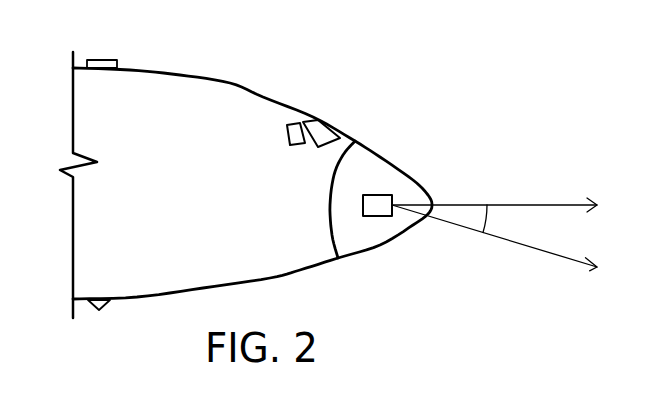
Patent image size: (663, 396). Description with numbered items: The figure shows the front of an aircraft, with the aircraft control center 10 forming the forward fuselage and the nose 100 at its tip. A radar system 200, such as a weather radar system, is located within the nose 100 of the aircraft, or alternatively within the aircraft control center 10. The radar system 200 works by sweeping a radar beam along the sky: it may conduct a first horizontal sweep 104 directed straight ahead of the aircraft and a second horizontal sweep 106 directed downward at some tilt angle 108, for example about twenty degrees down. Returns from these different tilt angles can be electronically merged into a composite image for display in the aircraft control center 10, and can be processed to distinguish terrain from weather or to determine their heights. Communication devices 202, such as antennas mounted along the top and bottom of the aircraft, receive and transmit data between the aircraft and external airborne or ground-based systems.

The aircraft control center 10 is at (123, 83).
The nose 100 is at (357, 158).
The radar system 200 is at (377, 205).
The communication devices 202 is at (103, 63).
The first horizontal sweep 104 is at (568, 202).
The second horizontal sweep 106 is at (535, 250).
The tilt angle 108 is at (487, 204).